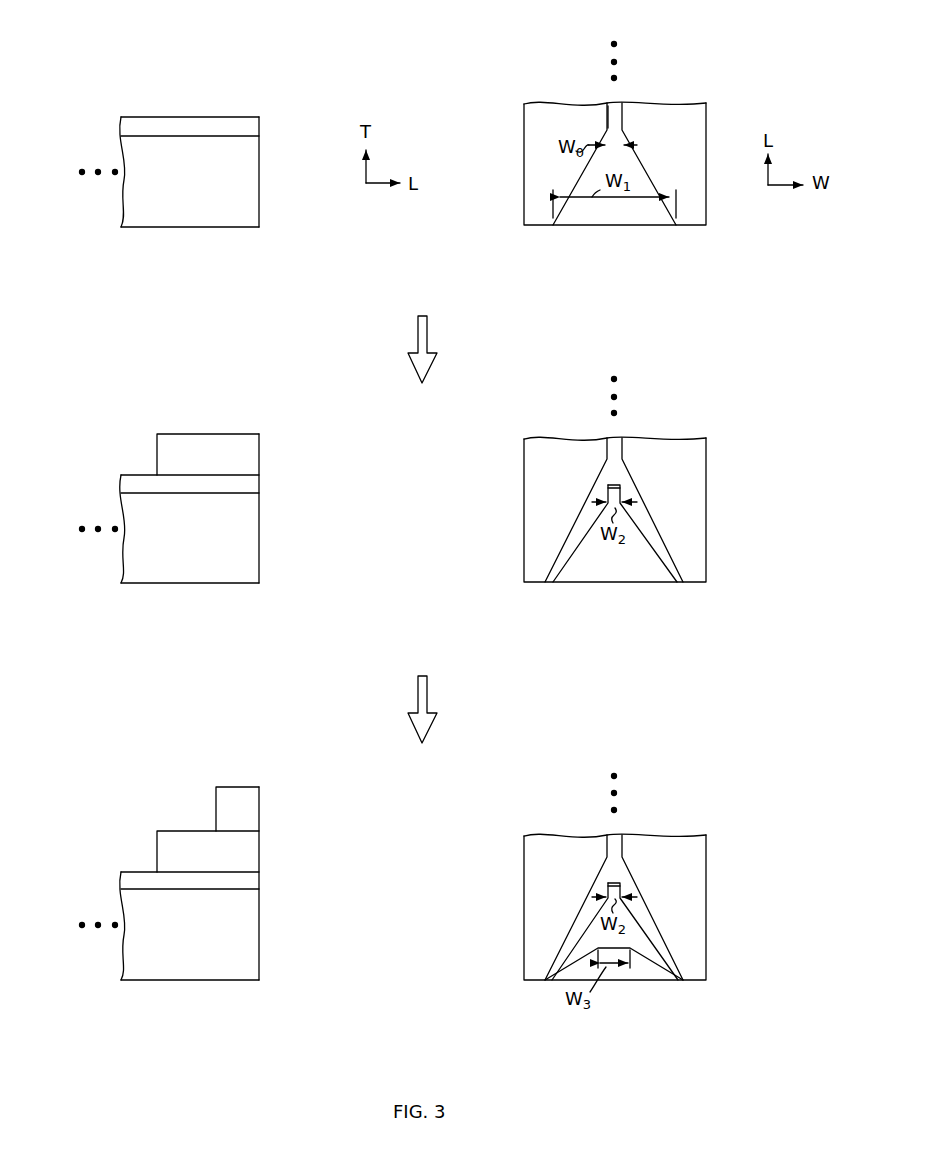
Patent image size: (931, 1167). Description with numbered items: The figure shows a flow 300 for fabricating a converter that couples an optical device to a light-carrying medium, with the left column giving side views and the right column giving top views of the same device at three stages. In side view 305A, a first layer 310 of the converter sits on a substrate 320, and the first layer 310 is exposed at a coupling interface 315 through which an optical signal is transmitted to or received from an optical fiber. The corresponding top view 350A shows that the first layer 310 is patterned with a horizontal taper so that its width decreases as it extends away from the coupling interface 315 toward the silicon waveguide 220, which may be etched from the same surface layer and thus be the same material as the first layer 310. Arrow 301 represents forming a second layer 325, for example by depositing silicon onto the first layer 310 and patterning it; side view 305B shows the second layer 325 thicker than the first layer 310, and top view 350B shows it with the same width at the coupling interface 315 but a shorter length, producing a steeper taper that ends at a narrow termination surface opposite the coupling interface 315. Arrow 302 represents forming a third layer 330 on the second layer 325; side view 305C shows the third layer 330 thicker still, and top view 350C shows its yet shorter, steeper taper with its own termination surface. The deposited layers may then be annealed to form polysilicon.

The flow 300 is at (370, 45).
The arrow 301 is at (428, 330).
The arrow 302 is at (428, 690).
The side view 305A is at (103, 116).
The side view 305B is at (103, 474).
The side view 305C is at (103, 871).
The top view 350A is at (730, 117).
The top view 350B is at (730, 477).
The top view 350C is at (730, 875).
The first layer 310 is at (260, 124).
The coupling interface 315 is at (268, 170).
The substrate 320 is at (260, 210).
The second layer 325 is at (260, 444).
The third layer 330 is at (260, 803).
The waveguide 220 is at (612, 115).